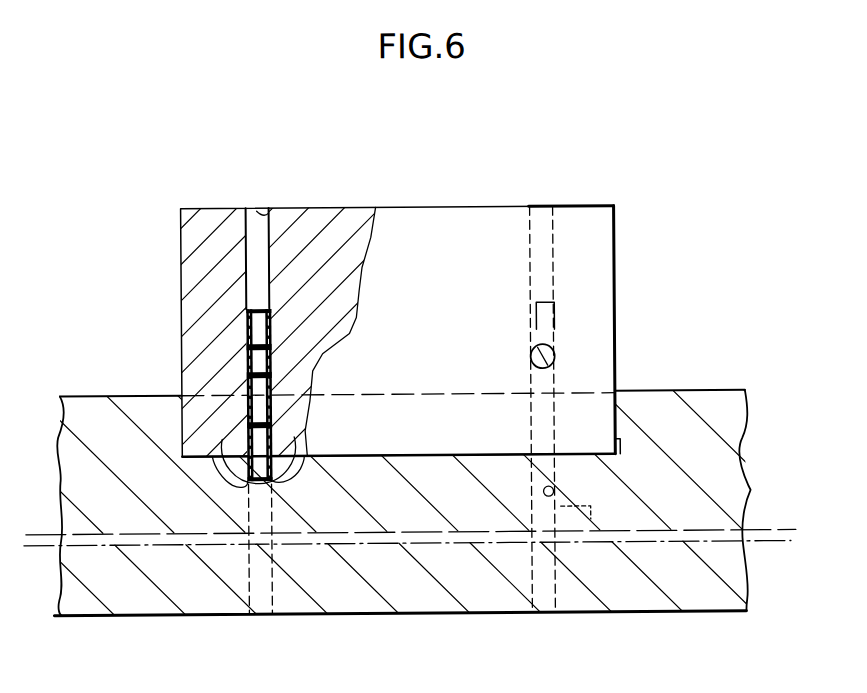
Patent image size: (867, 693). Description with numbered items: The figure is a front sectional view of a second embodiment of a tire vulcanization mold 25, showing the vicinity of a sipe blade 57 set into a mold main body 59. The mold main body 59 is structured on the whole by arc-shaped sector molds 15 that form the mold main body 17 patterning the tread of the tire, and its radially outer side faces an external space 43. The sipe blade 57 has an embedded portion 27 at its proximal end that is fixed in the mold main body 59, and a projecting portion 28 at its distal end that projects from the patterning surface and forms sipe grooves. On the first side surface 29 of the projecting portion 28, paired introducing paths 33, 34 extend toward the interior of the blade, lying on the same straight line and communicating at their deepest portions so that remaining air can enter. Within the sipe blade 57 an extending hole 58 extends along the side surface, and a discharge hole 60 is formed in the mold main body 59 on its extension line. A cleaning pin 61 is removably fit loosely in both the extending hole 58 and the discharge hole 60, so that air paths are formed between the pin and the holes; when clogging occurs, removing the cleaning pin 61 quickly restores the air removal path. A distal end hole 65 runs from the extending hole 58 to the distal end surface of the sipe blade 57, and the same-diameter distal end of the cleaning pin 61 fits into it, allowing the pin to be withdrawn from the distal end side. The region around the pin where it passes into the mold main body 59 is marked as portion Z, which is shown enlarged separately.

The sector mold 15 is at (727, 404).
The mold main body 17 is at (753, 492).
The tire vulcanization mold 25 is at (667, 235).
The embedded portion 27 is at (593, 435).
The projecting portion 28 is at (597, 292).
The first side surface 29 is at (468, 222).
The introducing path 33 is at (531, 352).
The introducing path 34 is at (545, 315).
The external space 43 is at (458, 648).
The sipe blade 57 is at (590, 236).
The extending hole 58 is at (256, 386).
The mold main body 59 is at (668, 405).
The discharge hole 60 is at (552, 492).
The cleaning pin 61 is at (250, 265).
The distal end hole 65 is at (262, 210).
The portion Z is at (206, 447).